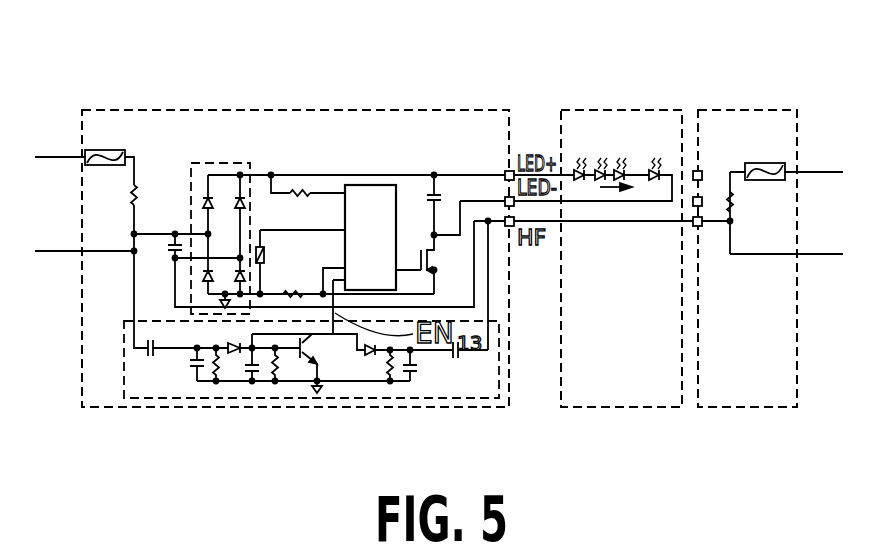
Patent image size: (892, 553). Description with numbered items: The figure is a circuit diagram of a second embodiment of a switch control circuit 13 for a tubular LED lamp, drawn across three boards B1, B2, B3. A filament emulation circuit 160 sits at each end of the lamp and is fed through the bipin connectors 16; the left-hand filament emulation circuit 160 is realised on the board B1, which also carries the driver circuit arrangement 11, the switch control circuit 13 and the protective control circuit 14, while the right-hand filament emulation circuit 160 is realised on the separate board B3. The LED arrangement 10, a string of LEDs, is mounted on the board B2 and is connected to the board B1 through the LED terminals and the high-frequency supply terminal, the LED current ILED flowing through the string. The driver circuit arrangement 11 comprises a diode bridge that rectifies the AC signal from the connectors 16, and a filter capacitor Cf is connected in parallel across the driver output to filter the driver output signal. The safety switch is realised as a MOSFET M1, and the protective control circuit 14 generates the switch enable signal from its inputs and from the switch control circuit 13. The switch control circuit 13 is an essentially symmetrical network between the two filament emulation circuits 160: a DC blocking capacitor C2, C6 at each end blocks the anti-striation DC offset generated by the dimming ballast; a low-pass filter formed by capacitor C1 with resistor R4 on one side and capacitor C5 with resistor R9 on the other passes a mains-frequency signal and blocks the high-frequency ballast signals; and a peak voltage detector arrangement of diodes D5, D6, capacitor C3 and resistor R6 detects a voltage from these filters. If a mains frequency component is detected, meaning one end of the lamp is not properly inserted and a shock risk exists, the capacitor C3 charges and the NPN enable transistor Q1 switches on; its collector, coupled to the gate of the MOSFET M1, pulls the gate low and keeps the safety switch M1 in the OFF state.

The filament emulation circuit 160 is at (100, 143).
The bipin connectors 16 is at (50, 155).
The driver circuit arrangement 11 is at (236, 162).
The protective control circuit 14 is at (369, 184).
The LED arrangement 10 is at (618, 148).
The switch control circuit 13 is at (291, 399).
The filter capacitor Cf is at (452, 192).
The MOSFET M1 is at (437, 265).
The NPN BJT Q1 is at (306, 352).
The diode D5 is at (232, 343).
The diode D6 is at (372, 355).
The capacitor C1 is at (192, 372).
The DC blocking capacitor C2 is at (150, 360).
The capacitor C3 is at (258, 375).
The capacitor C5 is at (412, 375).
The DC blocking capacitor C6 is at (458, 357).
The resistor R4 is at (220, 378).
The resistor R6 is at (282, 375).
The resistor R9 is at (392, 378).
The board B1 is at (103, 408).
The board B2 is at (638, 408).
The board B3 is at (752, 408).
The LED current ILED is at (607, 193).